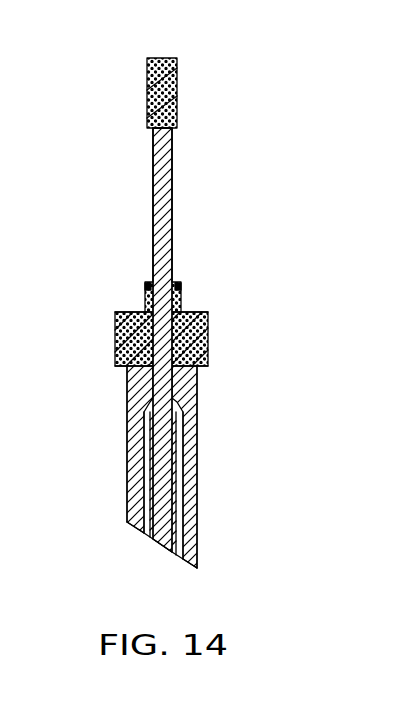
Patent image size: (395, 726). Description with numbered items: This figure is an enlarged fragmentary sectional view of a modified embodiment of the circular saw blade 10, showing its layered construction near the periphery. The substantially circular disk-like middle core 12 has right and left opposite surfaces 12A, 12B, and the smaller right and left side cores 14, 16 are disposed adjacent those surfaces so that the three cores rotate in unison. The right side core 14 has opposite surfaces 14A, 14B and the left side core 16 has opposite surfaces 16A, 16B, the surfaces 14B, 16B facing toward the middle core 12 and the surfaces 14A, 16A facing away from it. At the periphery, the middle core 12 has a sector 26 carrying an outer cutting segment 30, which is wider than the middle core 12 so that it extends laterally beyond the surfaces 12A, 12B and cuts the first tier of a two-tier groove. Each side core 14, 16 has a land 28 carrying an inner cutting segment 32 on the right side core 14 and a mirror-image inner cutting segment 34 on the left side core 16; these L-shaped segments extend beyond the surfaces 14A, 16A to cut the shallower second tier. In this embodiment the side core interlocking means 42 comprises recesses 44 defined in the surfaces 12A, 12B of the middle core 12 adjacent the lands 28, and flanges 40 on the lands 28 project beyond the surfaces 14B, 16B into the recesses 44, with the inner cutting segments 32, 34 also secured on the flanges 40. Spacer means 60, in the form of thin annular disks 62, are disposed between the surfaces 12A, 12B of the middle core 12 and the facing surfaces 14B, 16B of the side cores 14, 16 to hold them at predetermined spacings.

The circular saw blade 10 is at (210, 118).
The middle core 12 is at (174, 218).
The right opposite surface of the middle core 12A is at (172, 184).
The left opposite surface of the middle core 12B is at (153, 186).
The right side core 14 is at (200, 553).
The outer surface of the right side core 14A is at (197, 527).
The inner surface of the right side core 14B is at (197, 433).
The left side core 16 is at (127, 485).
The outer surface of the left side core 16A is at (127, 460).
The inner surface of the left side core 16B is at (127, 432).
The sector 26 is at (172, 148).
The land 28 is at (115, 342).
The outer cutting segment 30 is at (147, 95).
The inner cutting segment on the right side core 32 is at (208, 325).
The inner cutting segment on the left side core 34 is at (115, 322).
The flange 40 is at (126, 379).
The side core interlocking means 42 is at (130, 275).
The recess 44 is at (143, 290).
The spacer means 60 is at (142, 552).
The thin annular disk 62 is at (127, 503).